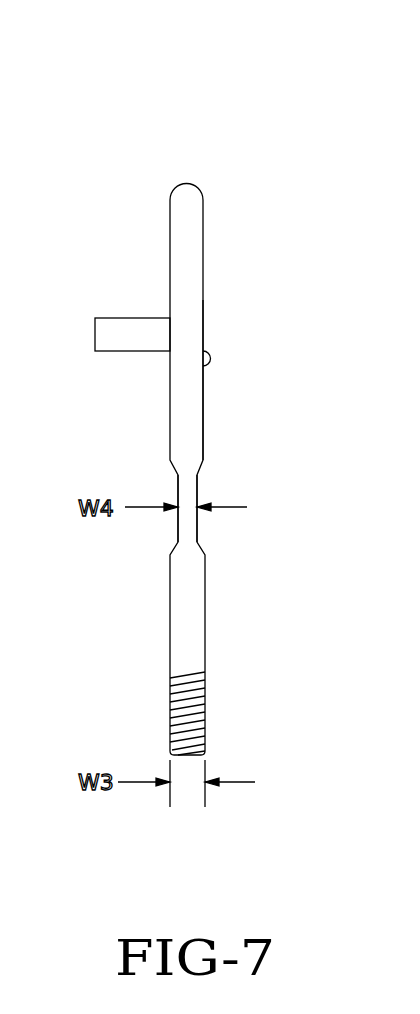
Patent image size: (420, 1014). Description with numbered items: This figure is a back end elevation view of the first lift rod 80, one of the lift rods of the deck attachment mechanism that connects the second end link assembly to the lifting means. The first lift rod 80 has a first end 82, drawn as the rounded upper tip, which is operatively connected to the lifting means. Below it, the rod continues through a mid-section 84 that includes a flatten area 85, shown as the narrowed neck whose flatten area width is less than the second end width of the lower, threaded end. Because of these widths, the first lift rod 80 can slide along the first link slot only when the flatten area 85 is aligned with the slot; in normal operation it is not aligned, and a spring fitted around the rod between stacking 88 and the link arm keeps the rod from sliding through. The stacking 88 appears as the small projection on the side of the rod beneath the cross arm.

The first lift rod 80 is at (208, 119).
The first end 82 is at (204, 197).
The mid-section 84 is at (203, 450).
The flatten area 85 is at (197, 528).
The stacking 88 is at (209, 358).